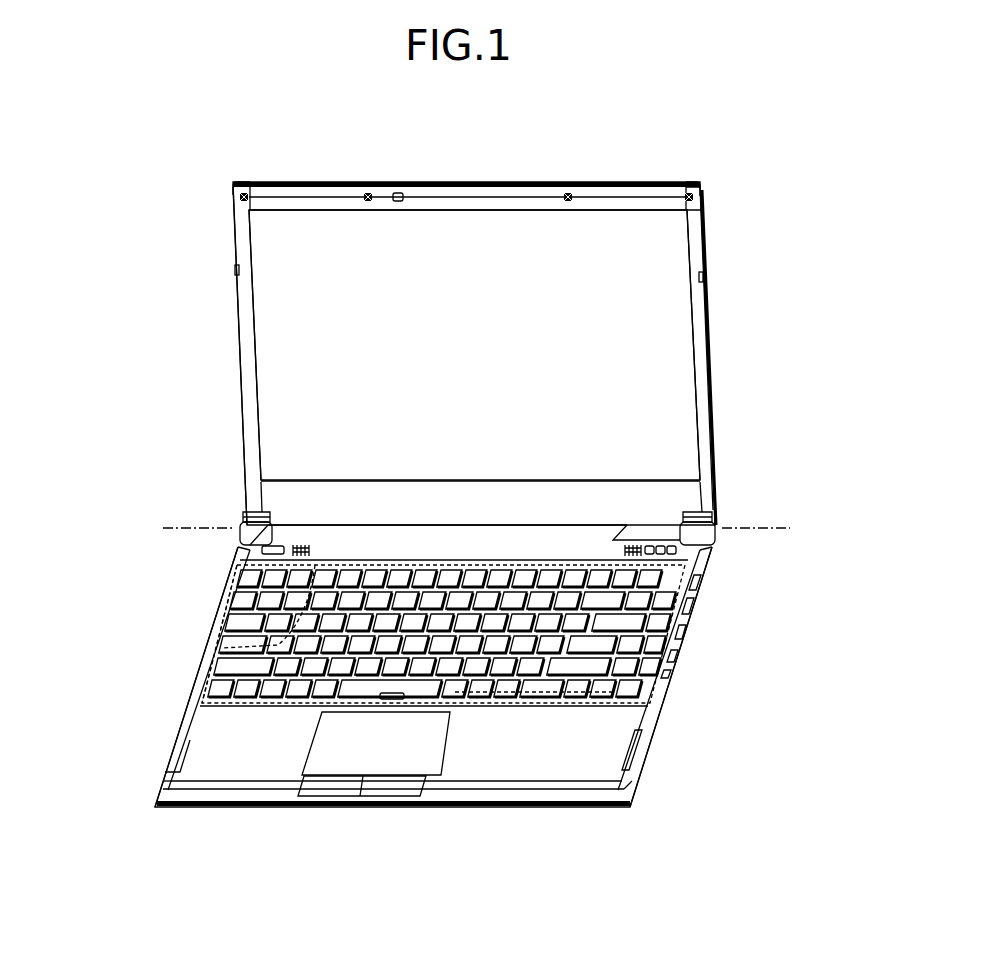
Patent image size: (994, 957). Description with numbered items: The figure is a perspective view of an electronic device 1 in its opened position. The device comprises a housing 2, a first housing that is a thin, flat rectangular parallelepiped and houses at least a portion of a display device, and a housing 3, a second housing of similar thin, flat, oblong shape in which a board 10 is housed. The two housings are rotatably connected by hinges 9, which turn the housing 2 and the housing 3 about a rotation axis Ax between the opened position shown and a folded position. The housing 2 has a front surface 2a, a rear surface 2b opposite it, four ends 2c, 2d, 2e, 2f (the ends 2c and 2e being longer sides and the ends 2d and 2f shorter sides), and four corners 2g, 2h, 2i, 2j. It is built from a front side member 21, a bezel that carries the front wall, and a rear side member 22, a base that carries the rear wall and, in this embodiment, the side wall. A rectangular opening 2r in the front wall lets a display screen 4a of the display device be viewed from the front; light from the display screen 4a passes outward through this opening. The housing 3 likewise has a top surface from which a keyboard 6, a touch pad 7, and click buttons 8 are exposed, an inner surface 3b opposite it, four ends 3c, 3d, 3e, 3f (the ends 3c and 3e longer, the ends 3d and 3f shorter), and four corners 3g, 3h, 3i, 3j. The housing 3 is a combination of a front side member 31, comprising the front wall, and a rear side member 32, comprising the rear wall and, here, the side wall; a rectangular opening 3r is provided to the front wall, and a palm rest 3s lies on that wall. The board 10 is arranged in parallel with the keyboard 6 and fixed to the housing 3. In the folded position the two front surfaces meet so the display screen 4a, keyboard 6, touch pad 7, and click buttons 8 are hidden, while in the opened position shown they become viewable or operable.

The electronic device 1 is at (597, 148).
The housing 2 is at (232, 208).
The surface 2a is at (700, 298).
The surface 2b is at (540, 183).
The end 2c is at (680, 185).
The end 2d is at (703, 250).
The end 2e is at (665, 525).
The end 2f is at (236, 268).
The corner 2g is at (703, 186).
The corner 2h is at (705, 505).
The corner 2i is at (258, 505).
The corner 2j is at (238, 182).
The opening 2r is at (258, 250).
The member 21 is at (322, 192).
The member 22 is at (707, 225).
The display screen 4a is at (462, 230).
The hinges 9 is at (233, 520).
The rotation axis Ax is at (790, 525).
The housing 3 is at (649, 790).
The surface 3b is at (278, 797).
The end 3c is at (385, 535).
The end 3d is at (646, 740).
The end 3e is at (513, 810).
The end 3f is at (218, 660).
The corner 3g is at (706, 548).
The corner 3h is at (630, 808).
The corner 3i is at (160, 806).
The corner 3j is at (250, 545).
The opening 3r is at (232, 600).
The palm rest 3s is at (236, 772).
The keyboard 6 is at (226, 634).
The touch pad 7 is at (428, 752).
The click buttons 8 is at (318, 797).
The board 10 is at (215, 700).
The member 31 is at (186, 722).
The member 32 is at (680, 665).